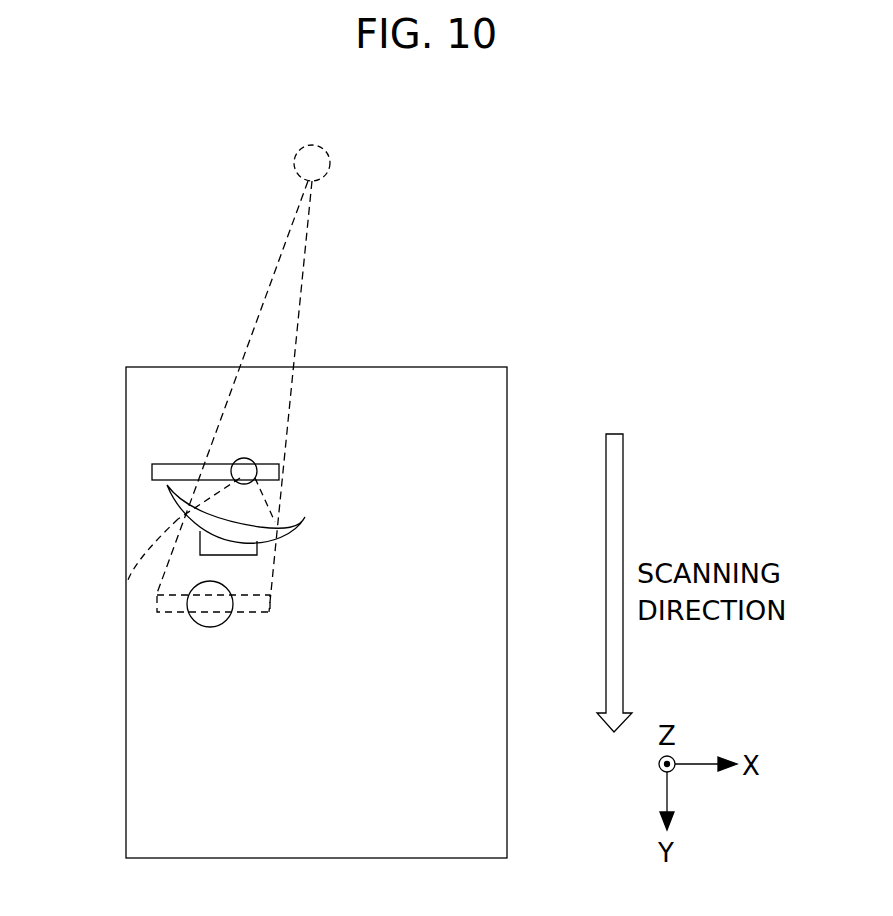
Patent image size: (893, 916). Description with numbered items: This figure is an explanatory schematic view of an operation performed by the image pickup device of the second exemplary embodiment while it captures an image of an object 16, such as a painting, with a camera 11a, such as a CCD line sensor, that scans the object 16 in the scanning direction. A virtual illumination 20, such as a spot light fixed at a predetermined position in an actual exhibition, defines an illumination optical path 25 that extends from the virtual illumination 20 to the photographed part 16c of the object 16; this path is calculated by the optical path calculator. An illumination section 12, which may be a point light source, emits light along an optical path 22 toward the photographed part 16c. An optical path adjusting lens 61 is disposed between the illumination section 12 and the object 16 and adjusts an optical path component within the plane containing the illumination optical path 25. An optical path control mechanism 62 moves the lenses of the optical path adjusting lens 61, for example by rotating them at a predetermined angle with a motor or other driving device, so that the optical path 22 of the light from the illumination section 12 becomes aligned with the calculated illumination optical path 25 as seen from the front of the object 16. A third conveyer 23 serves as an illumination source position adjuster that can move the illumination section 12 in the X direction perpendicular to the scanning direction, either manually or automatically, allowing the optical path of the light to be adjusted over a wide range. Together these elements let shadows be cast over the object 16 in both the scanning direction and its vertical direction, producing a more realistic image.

The object 16 is at (477, 378).
The virtual illumination 20 is at (320, 153).
The illumination optical path 25 is at (265, 316).
The third conveyer 23 is at (152, 472).
The illumination section 12 is at (248, 458).
The optical path adjusting lens 61 is at (305, 517).
The optical path control mechanism 62 is at (232, 545).
The optical path 22 is at (180, 575).
The camera 11a is at (187, 618).
The photographed part 16c is at (268, 613).